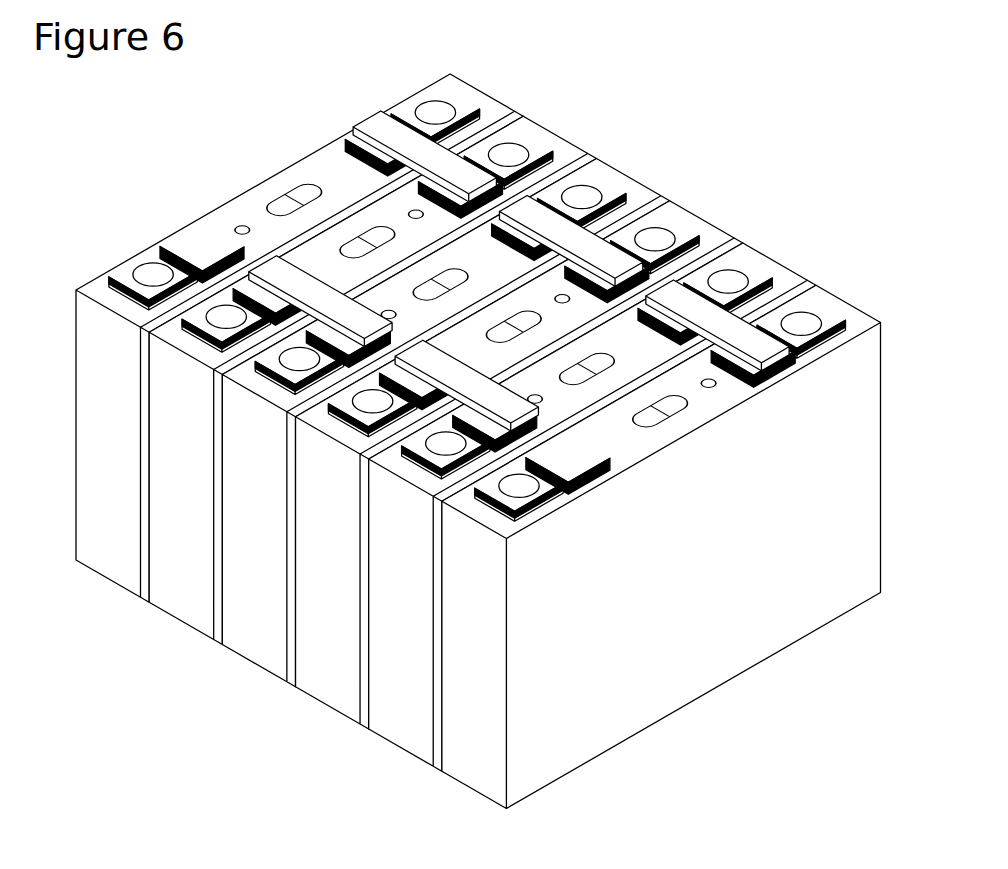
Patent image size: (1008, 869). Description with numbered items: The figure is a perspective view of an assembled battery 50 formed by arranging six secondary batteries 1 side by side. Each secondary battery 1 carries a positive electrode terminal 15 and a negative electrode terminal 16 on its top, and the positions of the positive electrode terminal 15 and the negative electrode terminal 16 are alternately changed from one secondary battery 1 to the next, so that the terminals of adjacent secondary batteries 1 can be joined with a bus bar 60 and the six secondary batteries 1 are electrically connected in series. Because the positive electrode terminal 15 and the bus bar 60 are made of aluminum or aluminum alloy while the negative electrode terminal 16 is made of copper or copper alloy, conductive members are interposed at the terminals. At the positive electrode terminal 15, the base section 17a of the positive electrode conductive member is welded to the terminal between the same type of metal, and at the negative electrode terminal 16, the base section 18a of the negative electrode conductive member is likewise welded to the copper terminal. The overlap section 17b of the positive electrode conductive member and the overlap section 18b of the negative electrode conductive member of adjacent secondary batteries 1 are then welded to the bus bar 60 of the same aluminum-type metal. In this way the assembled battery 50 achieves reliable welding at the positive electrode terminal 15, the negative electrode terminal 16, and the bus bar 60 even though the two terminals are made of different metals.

The secondary battery 1 is at (731, 652).
The positive electrode terminal 15 is at (817, 320).
The negative electrode terminal 16 is at (734, 282).
The base section of the positive electrode conductive member 17a is at (822, 350).
The overlap section of the positive electrode conductive member 17b is at (742, 378).
The base section of the negative electrode conductive member 18a is at (752, 276).
The overlap section of the negative electrode conductive member 18b is at (660, 320).
The assembled battery 50 is at (706, 102).
The bus bar 60 is at (700, 302).